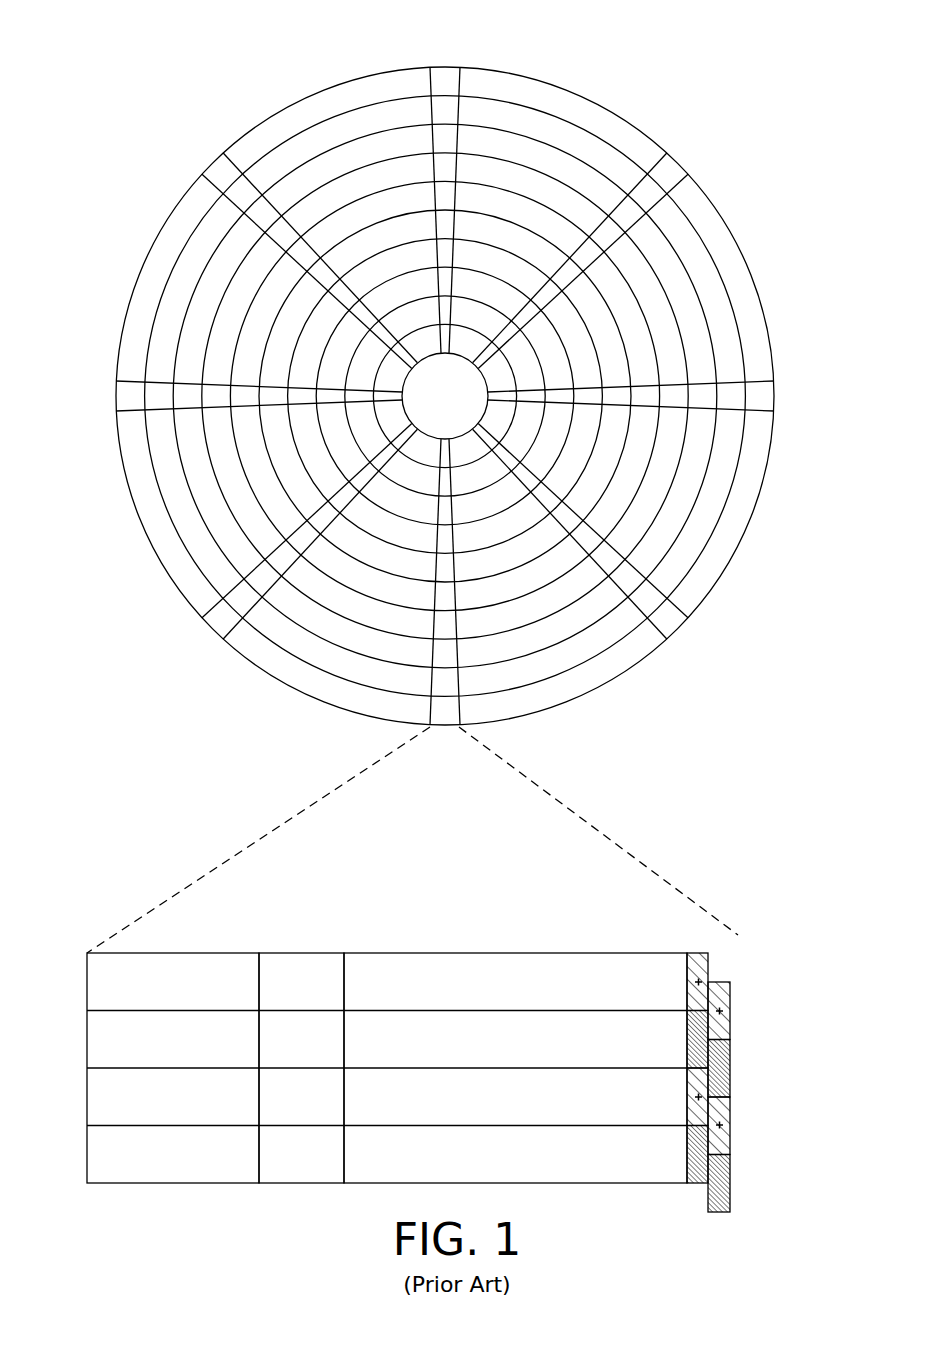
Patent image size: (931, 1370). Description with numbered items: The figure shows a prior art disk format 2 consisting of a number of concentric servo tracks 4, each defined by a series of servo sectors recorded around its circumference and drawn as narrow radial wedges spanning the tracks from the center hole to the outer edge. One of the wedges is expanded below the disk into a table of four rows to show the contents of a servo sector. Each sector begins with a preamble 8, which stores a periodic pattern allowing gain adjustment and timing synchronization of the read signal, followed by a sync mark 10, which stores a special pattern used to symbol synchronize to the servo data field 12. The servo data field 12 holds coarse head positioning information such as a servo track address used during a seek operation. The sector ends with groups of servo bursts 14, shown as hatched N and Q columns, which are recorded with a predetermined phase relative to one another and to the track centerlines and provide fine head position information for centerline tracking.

The disk format 2 is at (446, 406).
The servo tracks 4 is at (555, 136).
The preamble 8 is at (180, 952).
The sync mark 10 is at (304, 952).
The servo data field 12 is at (503, 952).
The servo bursts 14 is at (725, 951).